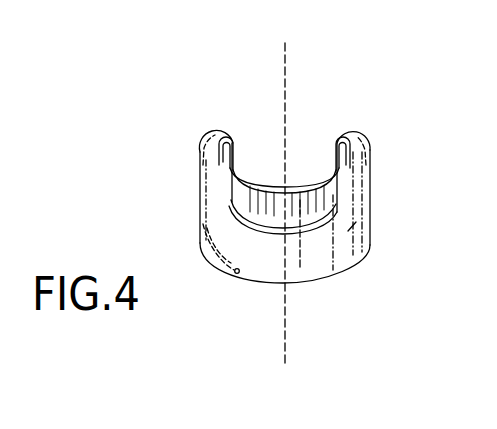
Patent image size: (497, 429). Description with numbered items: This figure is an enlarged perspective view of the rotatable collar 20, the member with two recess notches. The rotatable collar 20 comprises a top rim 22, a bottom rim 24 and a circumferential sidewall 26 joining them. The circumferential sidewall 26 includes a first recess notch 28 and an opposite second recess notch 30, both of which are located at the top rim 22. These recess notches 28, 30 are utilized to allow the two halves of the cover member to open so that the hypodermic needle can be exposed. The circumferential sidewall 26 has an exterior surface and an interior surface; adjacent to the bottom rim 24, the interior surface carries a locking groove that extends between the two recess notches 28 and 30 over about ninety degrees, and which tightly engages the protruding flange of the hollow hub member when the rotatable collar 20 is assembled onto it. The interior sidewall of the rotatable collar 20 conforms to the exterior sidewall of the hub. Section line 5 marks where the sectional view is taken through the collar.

The section line 5- 5 is at (285, 43).
The rotatable collar 20 is at (297, 190).
The top rim 22 is at (348, 133).
The bottom rim 24 is at (343, 267).
The circumferential sidewall 26 is at (350, 226).
The first recess notch 28 is at (233, 203).
The second recess notch 30 is at (252, 170).